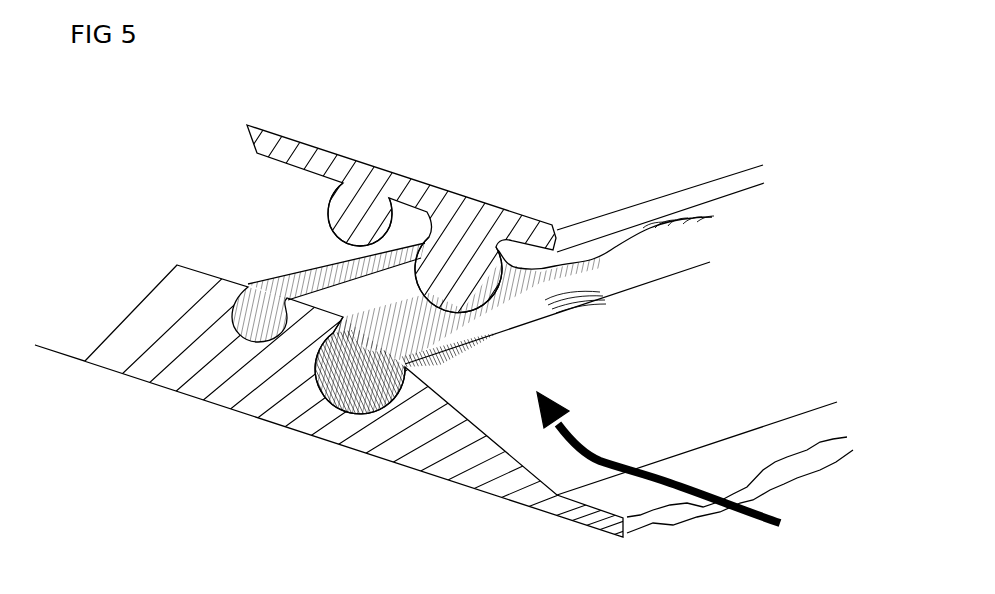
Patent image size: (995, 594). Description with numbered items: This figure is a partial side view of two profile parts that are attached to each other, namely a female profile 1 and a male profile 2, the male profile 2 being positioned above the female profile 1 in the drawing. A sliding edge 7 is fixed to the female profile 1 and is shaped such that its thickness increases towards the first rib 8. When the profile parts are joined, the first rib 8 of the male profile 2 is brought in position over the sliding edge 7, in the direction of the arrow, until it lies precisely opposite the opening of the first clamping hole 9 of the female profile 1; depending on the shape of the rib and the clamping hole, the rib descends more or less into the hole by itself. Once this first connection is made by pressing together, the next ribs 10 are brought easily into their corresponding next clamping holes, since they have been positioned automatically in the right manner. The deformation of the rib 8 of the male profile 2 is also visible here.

The female profile 1 is at (457, 466).
The male profile 2 is at (440, 178).
The sliding edge 7 is at (651, 352).
The first rib 8 is at (458, 274).
The first clamping hole 9 is at (360, 365).
The next ribs 10 is at (362, 212).